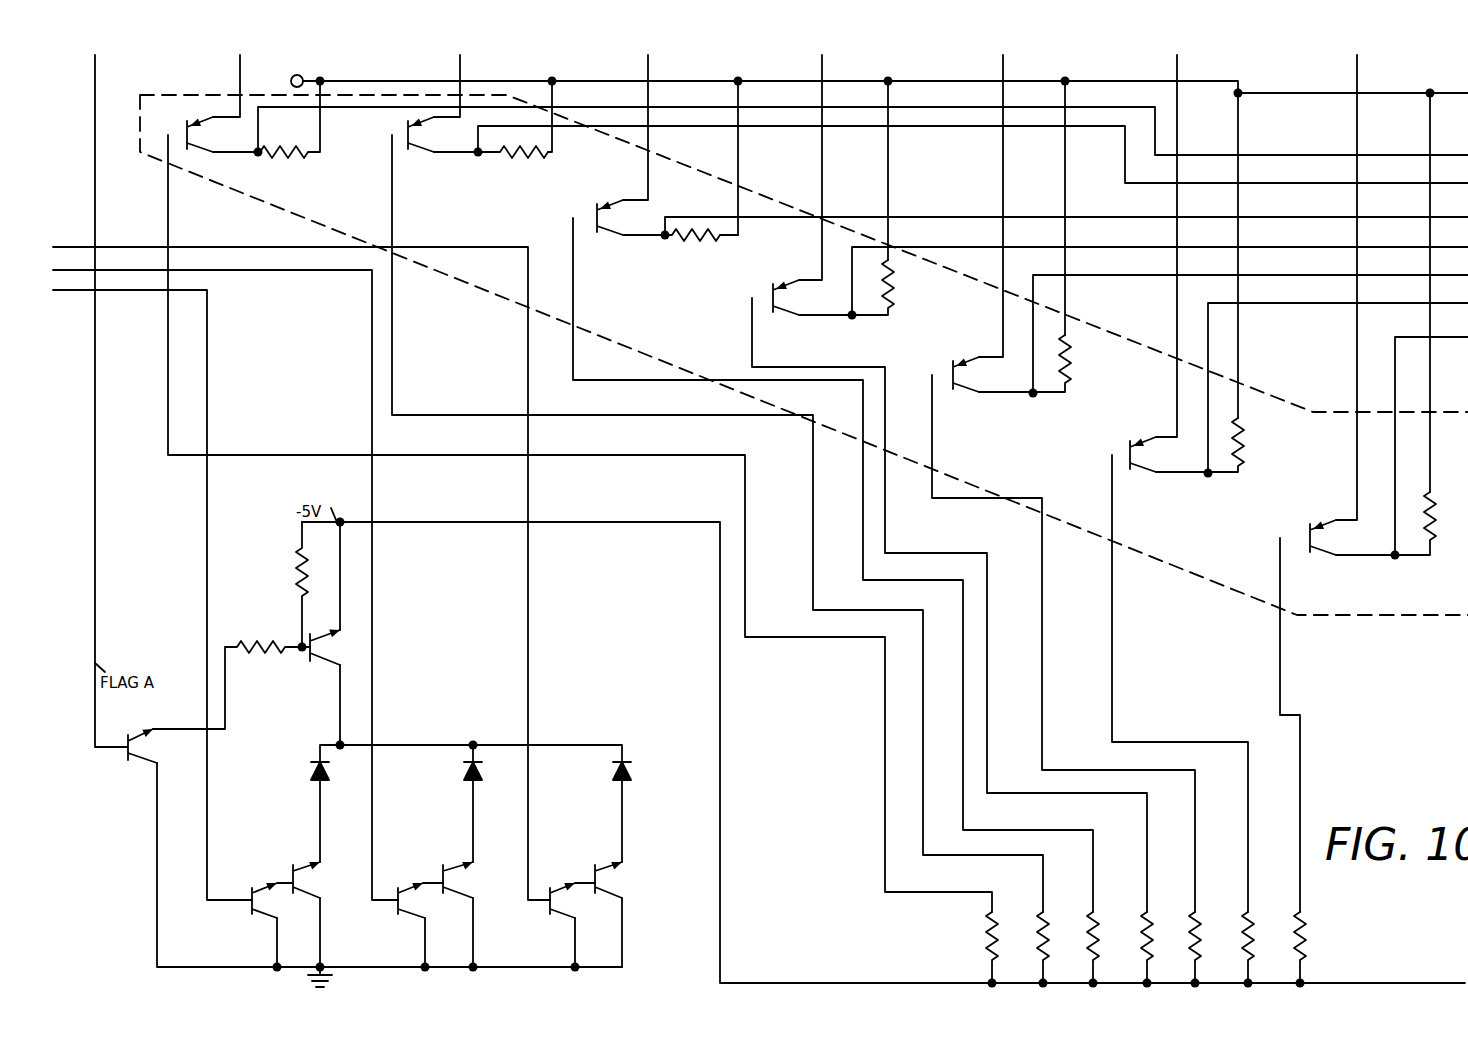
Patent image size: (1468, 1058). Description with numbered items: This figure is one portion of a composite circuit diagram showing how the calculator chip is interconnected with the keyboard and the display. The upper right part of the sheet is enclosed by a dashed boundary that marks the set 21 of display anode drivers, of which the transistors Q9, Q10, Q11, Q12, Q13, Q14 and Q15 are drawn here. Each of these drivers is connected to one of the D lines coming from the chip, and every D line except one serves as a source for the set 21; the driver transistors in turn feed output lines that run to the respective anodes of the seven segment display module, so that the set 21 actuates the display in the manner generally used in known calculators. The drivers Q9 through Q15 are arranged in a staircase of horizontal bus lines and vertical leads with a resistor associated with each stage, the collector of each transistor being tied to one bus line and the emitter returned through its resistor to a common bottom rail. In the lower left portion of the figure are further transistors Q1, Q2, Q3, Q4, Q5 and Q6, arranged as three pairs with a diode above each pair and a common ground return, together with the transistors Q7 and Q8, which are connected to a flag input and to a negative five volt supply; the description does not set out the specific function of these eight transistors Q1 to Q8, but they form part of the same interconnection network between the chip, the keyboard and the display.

The transistor Q1 is at (267, 898).
The transistor Q2 is at (300, 880).
The transistor Q3 is at (413, 898).
The transistor Q4 is at (450, 880).
The transistor Q5 is at (565, 898).
The transistor Q6 is at (602, 880).
The transistor Q7 is at (142, 742).
The transistor Q8 is at (323, 651).
The display anode driver Q9 is at (199, 139).
The display anode driver Q10 is at (420, 139).
The display anode driver Q11 is at (609, 222).
The display anode driver Q12 is at (785, 302).
The display anode driver Q13 is at (965, 379).
The display anode driver Q14 is at (1142, 459).
The display anode driver Q15 is at (1322, 542).
The set of display anode drivers 21 is at (1370, 620).